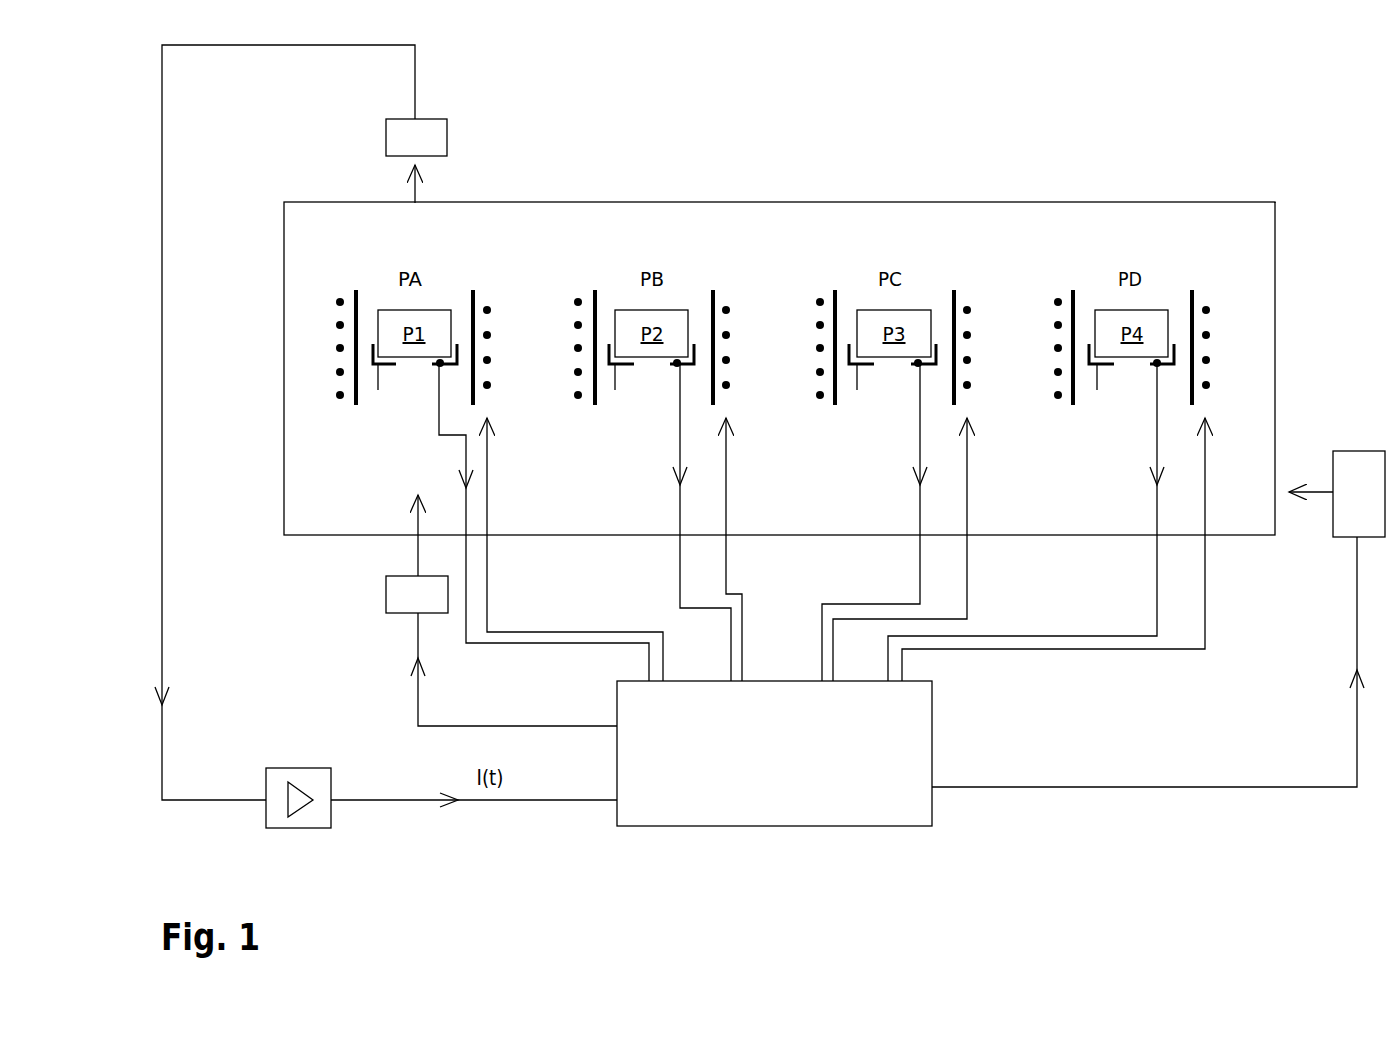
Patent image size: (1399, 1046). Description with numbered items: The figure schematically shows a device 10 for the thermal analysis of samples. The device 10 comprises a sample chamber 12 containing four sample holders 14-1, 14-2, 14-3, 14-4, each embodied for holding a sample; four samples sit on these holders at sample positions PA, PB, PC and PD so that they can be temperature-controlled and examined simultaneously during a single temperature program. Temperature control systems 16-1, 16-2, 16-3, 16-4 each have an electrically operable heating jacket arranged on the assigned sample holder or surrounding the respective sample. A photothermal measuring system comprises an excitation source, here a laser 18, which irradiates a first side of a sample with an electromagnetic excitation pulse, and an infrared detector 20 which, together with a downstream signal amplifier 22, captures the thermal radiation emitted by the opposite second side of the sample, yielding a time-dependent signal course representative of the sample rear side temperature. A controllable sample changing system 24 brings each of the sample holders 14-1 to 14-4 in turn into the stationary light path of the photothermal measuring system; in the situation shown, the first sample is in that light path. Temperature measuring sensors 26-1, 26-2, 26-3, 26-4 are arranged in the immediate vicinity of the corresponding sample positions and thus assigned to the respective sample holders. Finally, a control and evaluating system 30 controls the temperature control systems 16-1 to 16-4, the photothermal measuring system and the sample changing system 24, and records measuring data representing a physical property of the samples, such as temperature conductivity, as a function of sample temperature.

The device for the thermal analysis of samples 10 is at (1072, 103).
The sample chamber 12 is at (937, 225).
The sample holder 14-1 is at (410, 380).
The sample holder 14-2 is at (647, 380).
The sample holder 14-3 is at (889, 380).
The sample holder 14-4 is at (1127, 380).
The temperature control system 16-1 is at (343, 282).
The temperature control system 16-2 is at (581, 282).
The temperature control system 16-3 is at (823, 282).
The temperature control system 16-4 is at (1061, 282).
The laser 18 is at (501, 610).
The infrared detector 20 is at (416, 161).
The signal amplifier 22 is at (298, 768).
The sample changing system 24 is at (1158, 619).
The temperature measuring sensor 26-1 is at (438, 366).
The temperature measuring sensor 26-2 is at (676, 366).
The temperature measuring sensor 26-3 is at (916, 366).
The temperature measuring sensor 26-4 is at (1155, 366).
The control and evaluating system 30 is at (774, 753).